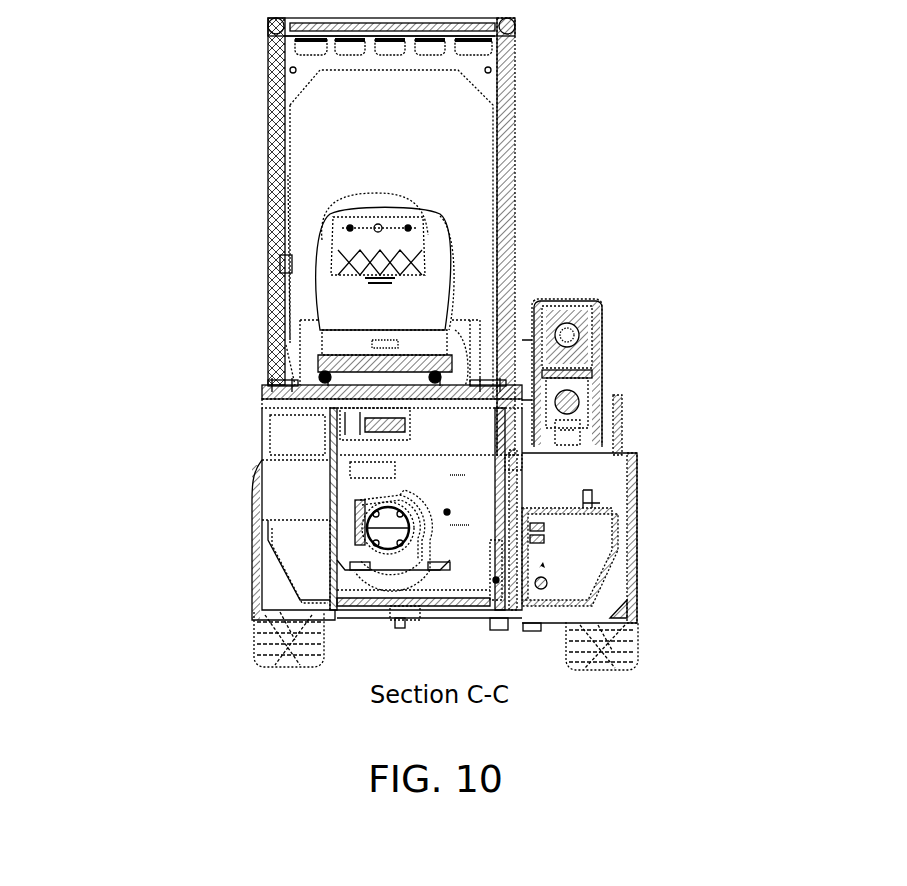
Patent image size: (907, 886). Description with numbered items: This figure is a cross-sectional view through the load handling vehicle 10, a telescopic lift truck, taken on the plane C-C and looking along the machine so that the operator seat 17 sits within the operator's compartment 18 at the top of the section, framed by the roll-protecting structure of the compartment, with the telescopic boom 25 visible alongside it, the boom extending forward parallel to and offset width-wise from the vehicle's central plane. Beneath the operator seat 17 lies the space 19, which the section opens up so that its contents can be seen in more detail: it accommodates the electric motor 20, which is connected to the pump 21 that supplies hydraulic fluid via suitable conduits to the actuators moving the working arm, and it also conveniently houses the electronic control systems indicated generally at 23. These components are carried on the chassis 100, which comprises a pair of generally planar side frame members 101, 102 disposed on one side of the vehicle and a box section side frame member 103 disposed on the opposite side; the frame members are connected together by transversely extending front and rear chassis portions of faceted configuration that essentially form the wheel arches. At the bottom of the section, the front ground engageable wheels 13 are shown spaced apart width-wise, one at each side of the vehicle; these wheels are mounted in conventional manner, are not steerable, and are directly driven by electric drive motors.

The load handling vehicle 10 is at (668, 108).
The front ground engageable wheels 13 is at (257, 650).
The operator seat 17 is at (436, 252).
The operator's compartment 18 is at (516, 102).
The space 19 is at (462, 510).
The electric motor 20 is at (407, 560).
The pump 21 is at (386, 553).
The electronic control systems 23 is at (503, 556).
The telescopic boom 25 is at (575, 298).
The chassis 100 is at (593, 575).
The side frame member 101 is at (617, 443).
The side frame member 102 is at (524, 403).
The box section side frame member 103 is at (298, 542).